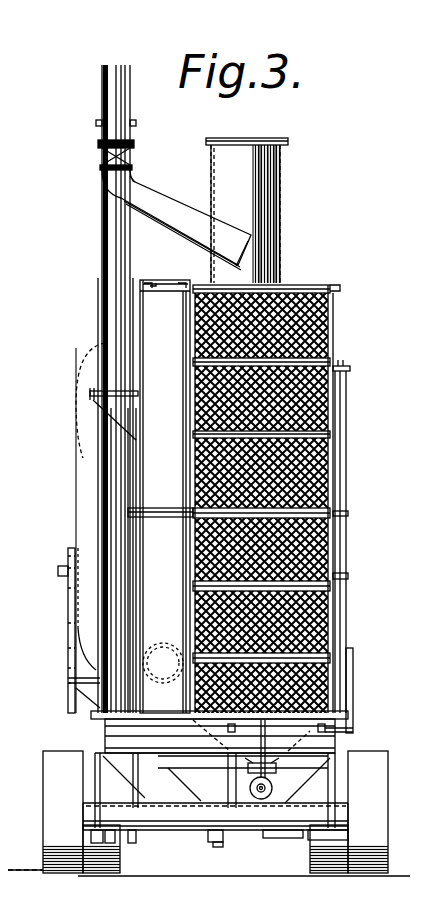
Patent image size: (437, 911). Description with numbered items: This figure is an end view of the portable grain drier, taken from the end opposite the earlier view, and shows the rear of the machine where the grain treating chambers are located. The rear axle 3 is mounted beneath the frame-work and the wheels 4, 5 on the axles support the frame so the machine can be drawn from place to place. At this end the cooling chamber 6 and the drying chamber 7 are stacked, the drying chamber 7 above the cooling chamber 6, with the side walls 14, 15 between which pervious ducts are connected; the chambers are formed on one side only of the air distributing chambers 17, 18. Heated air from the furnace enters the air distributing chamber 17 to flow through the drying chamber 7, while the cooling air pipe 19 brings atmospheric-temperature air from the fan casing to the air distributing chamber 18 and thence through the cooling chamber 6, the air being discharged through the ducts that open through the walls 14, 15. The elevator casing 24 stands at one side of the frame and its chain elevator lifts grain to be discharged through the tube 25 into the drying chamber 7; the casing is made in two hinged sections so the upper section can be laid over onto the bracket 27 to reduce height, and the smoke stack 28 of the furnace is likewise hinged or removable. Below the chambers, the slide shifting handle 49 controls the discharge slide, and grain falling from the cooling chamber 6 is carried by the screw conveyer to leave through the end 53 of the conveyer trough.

The rear axle 3 is at (305, 808).
The wheels 4 is at (92, 862).
The wheels 5 is at (47, 797).
The cooling chamber 6 is at (303, 607).
The drying chamber 7 is at (305, 400).
The side wall 14 is at (182, 321).
The side wall 15 is at (326, 318).
The air distributing chamber 17 is at (145, 362).
The air distributing chamber 18 is at (145, 597).
The cooling air pipe 19 is at (73, 466).
The elevator casing 24 is at (103, 230).
The tube 25 is at (161, 193).
The bracket 27 is at (85, 388).
The smoke stack 28 is at (258, 212).
The slide shifting handle 49 is at (343, 652).
The end of trough 53 is at (250, 792).